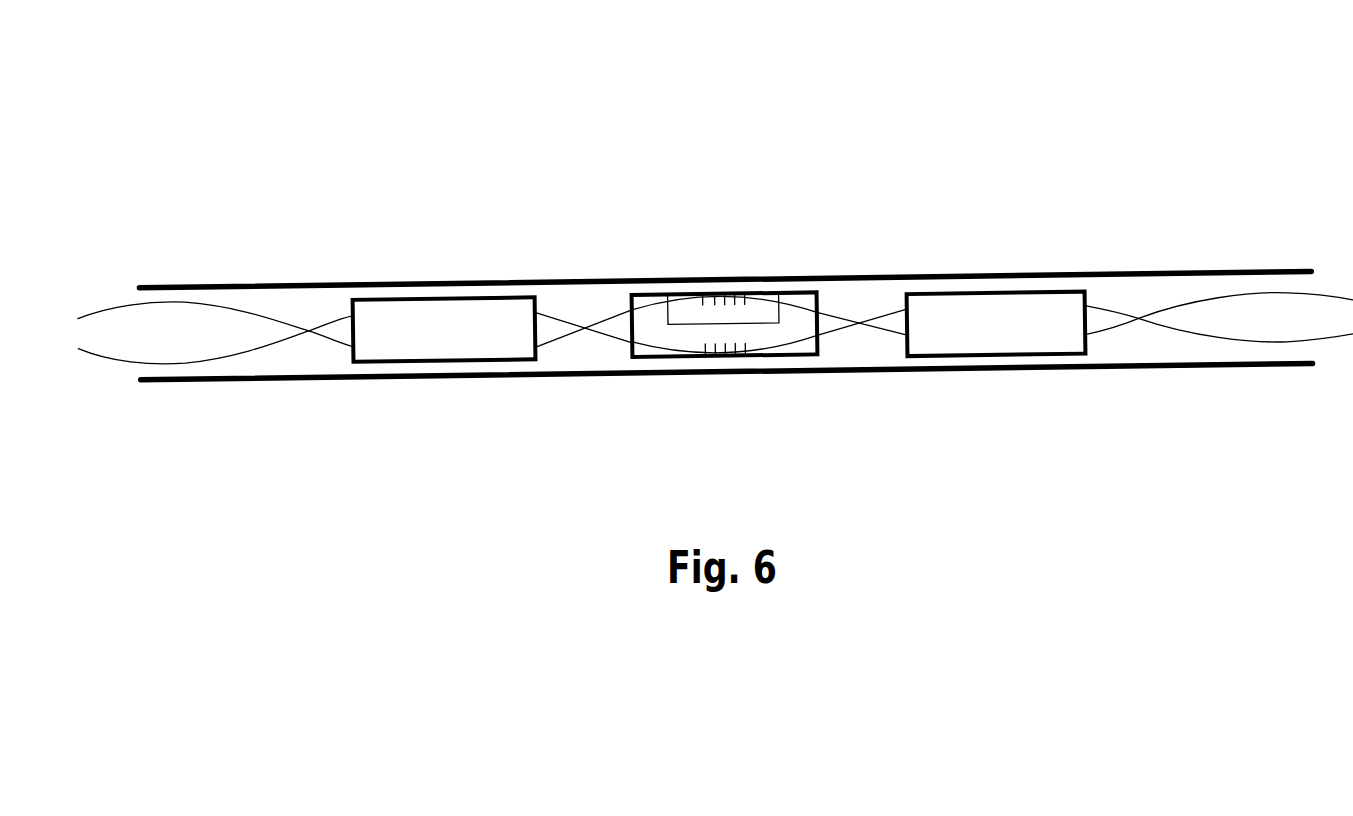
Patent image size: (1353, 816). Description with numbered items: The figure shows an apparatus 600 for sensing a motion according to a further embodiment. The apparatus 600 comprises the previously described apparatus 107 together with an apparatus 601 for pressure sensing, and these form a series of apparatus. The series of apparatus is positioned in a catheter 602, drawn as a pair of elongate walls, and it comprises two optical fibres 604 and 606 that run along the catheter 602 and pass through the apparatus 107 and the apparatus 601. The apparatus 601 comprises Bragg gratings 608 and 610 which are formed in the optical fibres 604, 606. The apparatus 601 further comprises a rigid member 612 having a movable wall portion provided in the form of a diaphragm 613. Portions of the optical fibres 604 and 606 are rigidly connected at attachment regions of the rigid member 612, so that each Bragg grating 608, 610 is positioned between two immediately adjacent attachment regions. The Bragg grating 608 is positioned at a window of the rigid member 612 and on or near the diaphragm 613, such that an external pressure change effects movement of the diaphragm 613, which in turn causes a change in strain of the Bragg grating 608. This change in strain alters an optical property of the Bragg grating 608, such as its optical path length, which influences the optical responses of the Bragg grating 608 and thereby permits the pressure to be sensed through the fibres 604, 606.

The apparatus 600 is at (734, 164).
The apparatus for pressure sensing 601 is at (802, 290).
The catheter 602 is at (1115, 366).
The optical fibre 604 is at (103, 355).
The optical fibre 606 is at (112, 308).
The apparatus 107 is at (433, 362).
The Bragg grating 608 is at (725, 296).
The Bragg grating 610 is at (710, 358).
The rigid member 612 is at (652, 325).
The diaphragm 613 is at (747, 298).